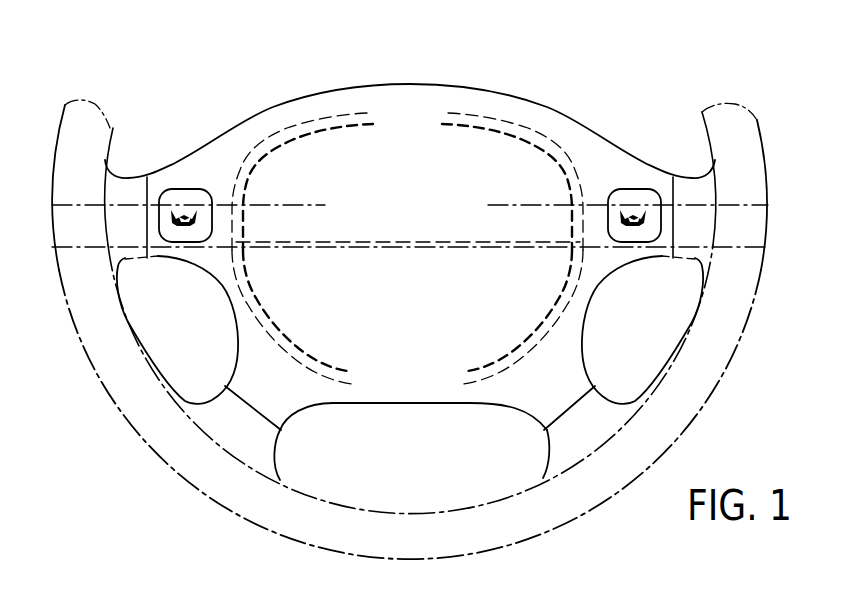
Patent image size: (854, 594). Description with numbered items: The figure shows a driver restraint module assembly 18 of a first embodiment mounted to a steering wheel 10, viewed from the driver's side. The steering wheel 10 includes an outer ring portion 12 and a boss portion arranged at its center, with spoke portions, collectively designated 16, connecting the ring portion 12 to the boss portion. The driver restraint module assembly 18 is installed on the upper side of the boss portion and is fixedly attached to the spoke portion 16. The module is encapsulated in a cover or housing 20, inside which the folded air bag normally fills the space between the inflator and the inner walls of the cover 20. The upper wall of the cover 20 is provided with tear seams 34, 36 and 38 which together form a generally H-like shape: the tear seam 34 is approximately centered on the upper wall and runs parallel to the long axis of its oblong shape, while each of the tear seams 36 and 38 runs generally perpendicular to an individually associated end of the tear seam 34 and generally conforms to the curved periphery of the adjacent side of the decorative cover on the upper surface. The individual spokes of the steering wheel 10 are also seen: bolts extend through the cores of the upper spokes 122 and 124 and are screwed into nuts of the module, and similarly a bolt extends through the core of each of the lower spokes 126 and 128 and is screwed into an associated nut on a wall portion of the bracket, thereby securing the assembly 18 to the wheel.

The steering wheel 10 is at (779, 148).
The ring portion 12 is at (706, 396).
The spoke portions 16 is at (236, 357).
The driver restraint module assembly 18 is at (526, 99).
The cover 20 is at (298, 150).
The tear seam 34 is at (403, 247).
The tear seam 36 is at (284, 331).
The tear seam 38 is at (523, 348).
The spoke 122 is at (690, 187).
The spoke 124 is at (132, 182).
The spoke 126 is at (553, 443).
The spoke 128 is at (270, 443).